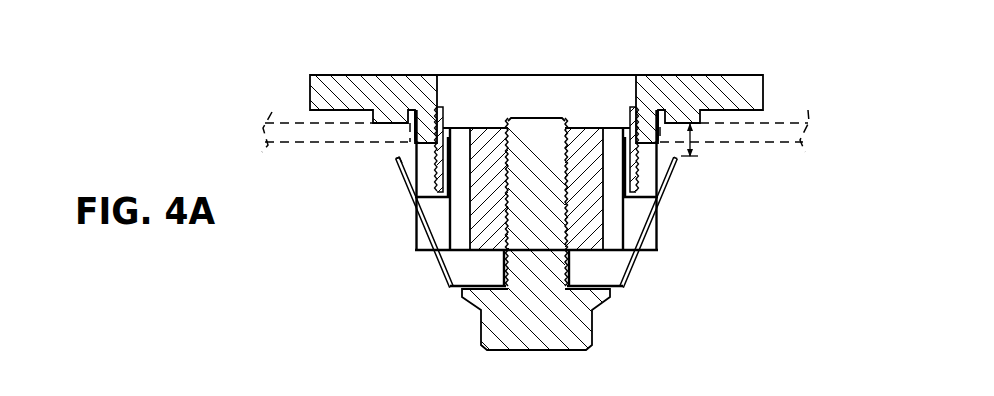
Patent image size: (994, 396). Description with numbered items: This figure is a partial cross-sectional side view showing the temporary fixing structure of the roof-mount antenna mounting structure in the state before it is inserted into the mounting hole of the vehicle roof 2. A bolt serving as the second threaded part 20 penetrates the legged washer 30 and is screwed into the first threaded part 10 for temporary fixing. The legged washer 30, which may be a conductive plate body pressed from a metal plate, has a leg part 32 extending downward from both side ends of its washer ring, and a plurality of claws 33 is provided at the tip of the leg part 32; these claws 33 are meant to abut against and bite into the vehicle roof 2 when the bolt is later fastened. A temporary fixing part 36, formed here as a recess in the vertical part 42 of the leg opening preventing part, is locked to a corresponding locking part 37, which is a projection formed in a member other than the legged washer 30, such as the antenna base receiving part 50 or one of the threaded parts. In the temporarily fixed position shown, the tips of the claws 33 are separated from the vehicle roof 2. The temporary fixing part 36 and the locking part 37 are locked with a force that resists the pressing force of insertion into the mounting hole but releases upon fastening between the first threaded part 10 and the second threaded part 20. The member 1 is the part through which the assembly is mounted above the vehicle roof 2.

The first plate 1 is at (757, 88).
The vehicle roof 2 is at (770, 150).
The first threaded part 10 is at (582, 143).
The second threaded part 20 is at (585, 333).
The legged washer 30 is at (646, 278).
The leg part 32 is at (428, 243).
The claws 33 is at (397, 160).
The temporary fixing part 36 is at (633, 130).
The locking part 37 is at (650, 78).
The vertical part 42 is at (446, 172).
The receiving part 50 is at (426, 134).